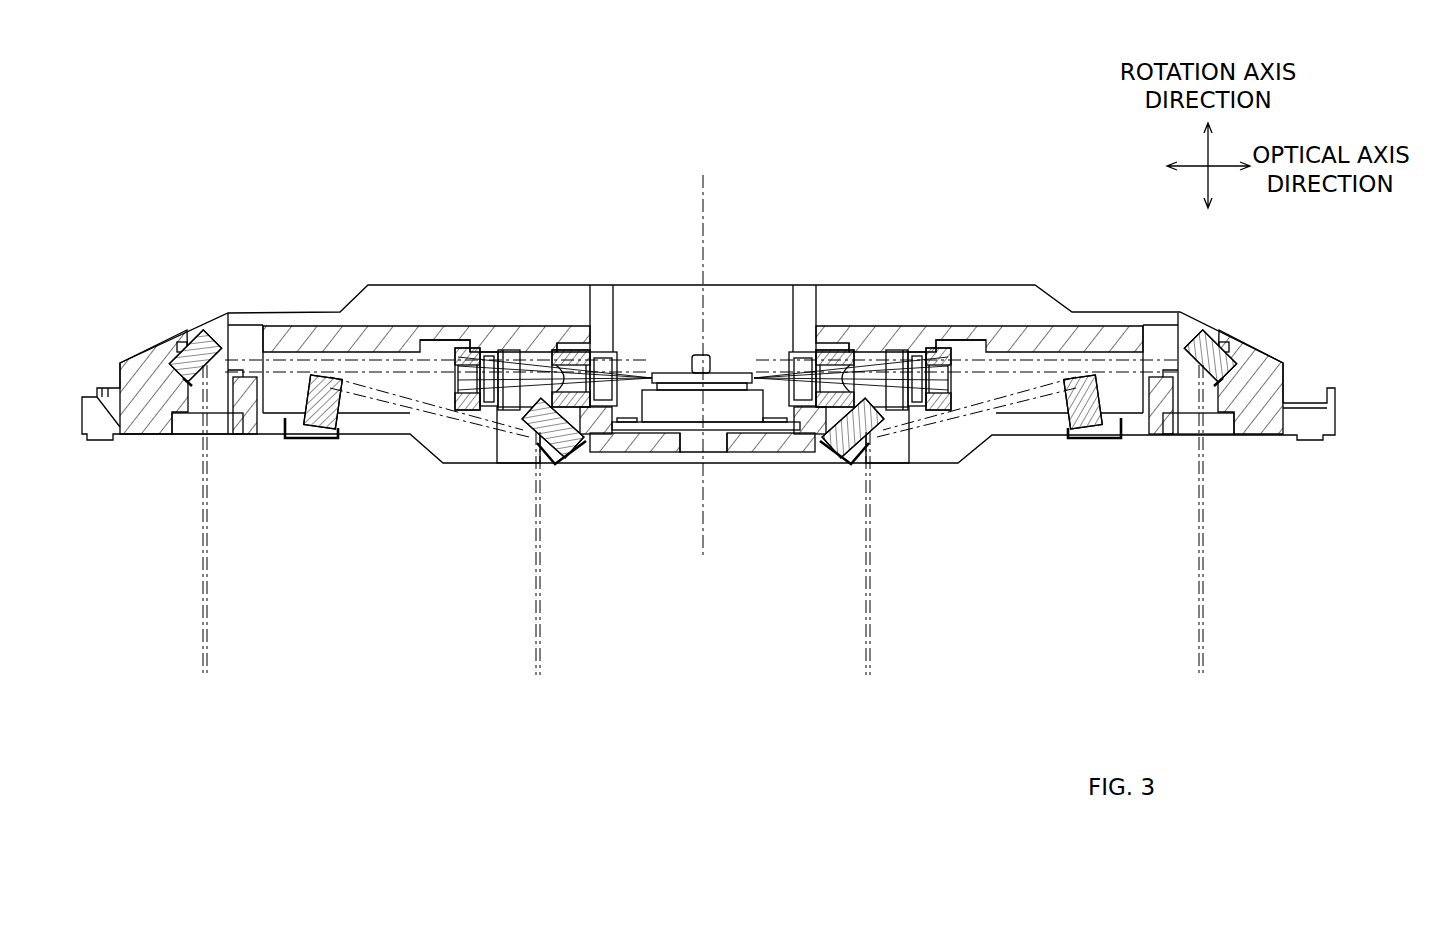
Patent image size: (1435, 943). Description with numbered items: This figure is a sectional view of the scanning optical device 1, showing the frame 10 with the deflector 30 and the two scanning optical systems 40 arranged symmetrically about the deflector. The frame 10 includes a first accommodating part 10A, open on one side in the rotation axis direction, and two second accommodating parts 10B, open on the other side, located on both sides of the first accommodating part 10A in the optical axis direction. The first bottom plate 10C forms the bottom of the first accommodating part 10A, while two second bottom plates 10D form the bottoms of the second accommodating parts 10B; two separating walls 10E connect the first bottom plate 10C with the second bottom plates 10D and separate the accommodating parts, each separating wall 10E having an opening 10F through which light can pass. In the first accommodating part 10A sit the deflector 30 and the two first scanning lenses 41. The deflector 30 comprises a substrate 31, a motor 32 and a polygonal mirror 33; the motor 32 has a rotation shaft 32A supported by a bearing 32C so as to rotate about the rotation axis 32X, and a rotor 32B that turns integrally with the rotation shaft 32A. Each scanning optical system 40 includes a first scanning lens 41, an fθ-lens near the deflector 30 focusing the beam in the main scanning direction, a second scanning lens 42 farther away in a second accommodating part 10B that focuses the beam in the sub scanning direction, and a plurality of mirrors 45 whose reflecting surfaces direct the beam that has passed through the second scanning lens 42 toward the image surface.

The scanning optical device 1 is at (1032, 129).
The frame 10 is at (999, 283).
The first accommodating part 10A is at (637, 300).
The second accommodating part 10B is at (432, 441).
The first bottom plate 10C is at (643, 442).
The second bottom plate 10D is at (404, 328).
The separating wall 10E is at (556, 343).
The opening 10F is at (580, 441).
The deflector 30 is at (706, 378).
The substrate 31 is at (688, 448).
The motor 32 is at (706, 378).
The rotation shaft 32A is at (700, 356).
The rotor 32B is at (735, 410).
The bearing 32C is at (713, 431).
The rotation axis 32X is at (703, 193).
The polygonal mirror 33 is at (725, 378).
The scanning optical system 40 is at (567, 196).
The first scanning lens 41 is at (577, 350).
The second scanning lens 42 is at (472, 348).
The mirror 45 is at (198, 333).